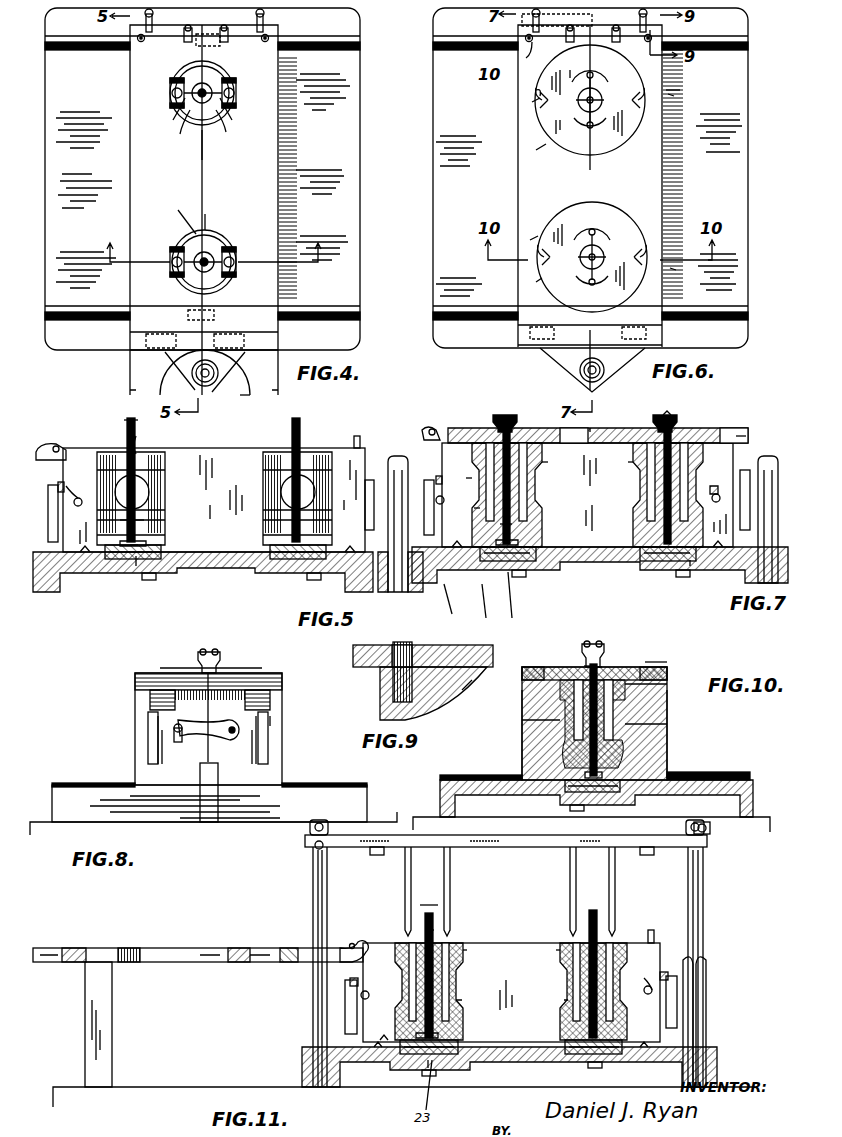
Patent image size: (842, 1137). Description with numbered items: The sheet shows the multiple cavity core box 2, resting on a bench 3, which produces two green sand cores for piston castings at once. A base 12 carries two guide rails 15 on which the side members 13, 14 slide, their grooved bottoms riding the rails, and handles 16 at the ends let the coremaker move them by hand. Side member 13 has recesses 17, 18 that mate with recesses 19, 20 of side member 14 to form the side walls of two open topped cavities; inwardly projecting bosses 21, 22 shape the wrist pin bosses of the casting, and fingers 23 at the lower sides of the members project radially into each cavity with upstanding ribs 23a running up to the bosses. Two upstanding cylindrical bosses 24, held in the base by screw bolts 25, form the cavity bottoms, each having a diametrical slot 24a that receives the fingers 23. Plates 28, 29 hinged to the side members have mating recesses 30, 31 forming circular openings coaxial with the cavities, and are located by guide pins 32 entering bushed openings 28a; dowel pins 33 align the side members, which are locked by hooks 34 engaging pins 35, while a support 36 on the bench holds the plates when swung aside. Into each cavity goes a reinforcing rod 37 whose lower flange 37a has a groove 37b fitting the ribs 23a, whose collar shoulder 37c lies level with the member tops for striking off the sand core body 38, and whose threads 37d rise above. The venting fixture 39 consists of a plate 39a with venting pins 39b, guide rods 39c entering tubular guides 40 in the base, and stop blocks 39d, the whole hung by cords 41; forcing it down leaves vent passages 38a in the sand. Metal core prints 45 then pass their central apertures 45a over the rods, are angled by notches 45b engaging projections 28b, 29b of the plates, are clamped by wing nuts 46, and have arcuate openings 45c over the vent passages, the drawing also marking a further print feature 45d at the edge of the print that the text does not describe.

In FIG. 4, the core box 2 is at (358, 102).
In FIG. 6, the core box 2 is at (750, 96).
In FIG. 5, the core box 2 is at (210, 446).
In FIG. 7, the core box 2 is at (628, 584).
In FIG. 8, the core box 2 is at (118, 738).
In FIG. 10, the core box 2 is at (688, 758).
In FIG. 11, the core box 2 is at (490, 944).
In FIG. 8, the bench 3 is at (368, 822).
In FIG. 10, the bench 3 is at (762, 818).
In FIG. 11, the bench 3 is at (174, 1086).
In FIG. 4, the base 12 is at (364, 170).
In FIG. 6, the base 12 is at (744, 178).
In FIG. 5, the base 12 is at (210, 566).
In FIG. 7, the base 12 is at (590, 552).
In FIG. 8, the base 12 is at (174, 810).
In FIG. 10, the base 12 is at (754, 780).
In FIG. 11, the base 12 is at (524, 1060).
In FIG. 4, the side member 13 is at (130, 146).
In FIG. 5, the side member 13 is at (218, 499).
In FIG. 7, the side member 13 is at (655, 494).
In FIG. 8, the side member 13 is at (138, 760).
In FIG. 10, the side member 13 is at (522, 746).
In FIG. 11, the side member 13 is at (515, 977).
In FIG. 4, the side member 14 is at (284, 144).
In FIG. 8, the side member 14 is at (280, 754).
In FIG. 9, the side member 14 is at (454, 700).
In FIG. 10, the side member 14 is at (668, 736).
In FIG. 4, the guide rail 15 is at (362, 306).
In FIG. 6, the guide rail 15 is at (736, 302).
In FIG. 5, the guide rail 15 is at (340, 558).
In FIG. 7, the guide rail 15 is at (708, 550).
In FIG. 8, the guide rail 15 is at (62, 784).
In FIG. 10, the guide rail 15 is at (468, 776).
In FIG. 11, the guide rail 15 is at (646, 1056).
In FIG. 4, the handle 16 is at (142, 40).
In FIG. 6, the handle 16 is at (518, 40).
In FIG. 5, the handle 16 is at (370, 462).
In FIG. 7, the handle 16 is at (754, 460).
In FIG. 8, the handle 16 is at (268, 716).
In FIG. 11, the handle 16 is at (704, 1012).
In FIG. 4, the recess 17 is at (172, 116).
In FIG. 5, the recess 17 is at (266, 474).
In FIG. 7, the recess 17 is at (638, 466).
In FIG. 11, the recess 17 is at (556, 942).
In FIG. 4, the recess 18 is at (184, 238).
In FIG. 5, the recess 18 is at (166, 474).
In FIG. 7, the recess 18 is at (544, 466).
In FIG. 10, the recess 18 is at (554, 692).
In FIG. 11, the recess 18 is at (464, 944).
In FIG. 4, the recess 19 is at (232, 121).
In FIG. 4, the recess 20 is at (230, 240).
In FIG. 10, the recess 20 is at (666, 686).
In FIG. 4, the boss 21 is at (176, 284).
In FIG. 5, the boss 21 is at (312, 466).
In FIG. 10, the boss 21 is at (560, 720).
In FIG. 4, the boss 22 is at (238, 280).
In FIG. 10, the boss 22 is at (704, 720).
In FIG. 4, the finger 23 is at (224, 220).
In FIG. 5, the finger 23 is at (270, 554).
In FIG. 7, the finger 23 is at (678, 548).
In FIG. 10, the finger 23 is at (602, 792).
In FIG. 11, the finger 23 is at (602, 848).
In FIG. 4, the rib 23a is at (218, 272).
In FIG. 4, the cylindrical boss 24 is at (198, 210).
In FIG. 5, the cylindrical boss 24 is at (258, 552).
In FIG. 7, the cylindrical boss 24 is at (644, 560).
In FIG. 10, the cylindrical boss 24 is at (584, 788).
In FIG. 11, the cylindrical boss 24 is at (464, 1048).
In FIG. 4, the slot 24a is at (196, 290).
In FIG. 5, the slot 24a is at (140, 556).
In FIG. 7, the slot 24a is at (517, 602).
In FIG. 11, the slot 24a is at (432, 1066).
In FIG. 5, the screw bolt 25 is at (146, 560).
In FIG. 7, the screw bolt 25 is at (706, 578).
In FIG. 4, the plate 28 is at (130, 374).
In FIG. 6, the plate 28 is at (518, 170).
In FIG. 5, the plate 28 is at (50, 450).
In FIG. 7, the plate 28 is at (742, 432).
In FIG. 8, the plate 28 is at (138, 664).
In FIG. 10, the plate 28 is at (526, 668).
In FIG. 11, the plate 28 is at (204, 962).
In FIG. 6, the bushed opening 28a is at (668, 56).
In FIG. 7, the bushed opening 28a is at (443, 606).
In FIG. 9, the bushed opening 28a is at (446, 638).
In FIG. 6, the projection 28b is at (536, 280).
In FIG. 10, the projection 28b is at (524, 676).
In FIG. 11, the projection 28b is at (278, 948).
In FIG. 4, the plate 29 is at (272, 386).
In FIG. 6, the plate 29 is at (678, 164).
In FIG. 7, the plate 29 is at (480, 608).
In FIG. 8, the plate 29 is at (276, 670).
In FIG. 9, the plate 29 is at (472, 648).
In FIG. 10, the plate 29 is at (666, 670).
In FIG. 6, the projection 29b is at (674, 268).
In FIG. 10, the projection 29b is at (660, 648).
In FIG. 4, the recess 30 is at (130, 388).
In FIG. 6, the recess 30 is at (536, 196).
In FIG. 7, the recess 30 is at (604, 428).
In FIG. 11, the recess 30 is at (228, 948).
In FIG. 4, the recess 31 is at (248, 391).
In FIG. 6, the recess 31 is at (670, 116).
In FIG. 4, the guide pin 32 is at (266, 40).
In FIG. 6, the guide pin 32 is at (512, 70).
In FIG. 5, the guide pin 32 is at (358, 434).
In FIG. 9, the guide pin 32 is at (400, 644).
In FIG. 11, the guide pin 32 is at (652, 928).
In FIG. 4, the dowel pin 33 is at (226, 386).
In FIG. 5, the dowel pin 33 is at (62, 482).
In FIG. 7, the dowel pin 33 is at (716, 486).
In FIG. 11, the dowel pin 33 is at (664, 968).
In FIG. 4, the hook 34 is at (151, 39).
In FIG. 6, the hook 34 is at (539, 45).
In FIG. 5, the hook 34 is at (62, 500).
In FIG. 7, the hook 34 is at (718, 498).
In FIG. 8, the hook 34 is at (214, 738).
In FIG. 11, the hook 34 is at (706, 974).
In FIG. 4, the pin 35 is at (181, 43).
In FIG. 6, the pin 35 is at (571, 38).
In FIG. 8, the pin 35 is at (182, 744).
In FIG. 11, the support 36 is at (88, 1014).
In FIG. 4, the rod 37 is at (208, 214).
In FIG. 6, the rod 37 is at (606, 244).
In FIG. 5, the rod 37 is at (290, 436).
In FIG. 7, the rod 37 is at (642, 496).
In FIG. 8, the rod 37 is at (210, 648).
In FIG. 10, the rod 37 is at (622, 702).
In FIG. 11, the rod 37 is at (626, 958).
In FIG. 4, the flange 37a is at (178, 210).
In FIG. 5, the flange 37a is at (142, 524).
In FIG. 7, the flange 37a is at (540, 524).
In FIG. 11, the flange 37a is at (460, 1032).
In FIG. 5, the groove 37b is at (146, 542).
In FIG. 7, the groove 37b is at (530, 542).
In FIG. 11, the groove 37b is at (382, 1038).
In FIG. 4, the shoulder 37c is at (200, 160).
In FIG. 5, the shoulder 37c is at (126, 438).
In FIG. 7, the shoulder 37c is at (496, 420).
In FIG. 11, the shoulder 37c is at (442, 924).
In FIG. 5, the screw threads 37d is at (146, 436).
In FIG. 11, the screw threads 37d is at (432, 912).
In FIG. 7, the core body 38 is at (624, 514).
In FIG. 10, the core body 38 is at (560, 752).
In FIG. 11, the core body 38 is at (562, 986).
In FIG. 6, the vent passage 38a is at (594, 282).
In FIG. 7, the vent passage 38a is at (474, 510).
In FIG. 11, the vent passage 38a is at (558, 1006).
In FIG. 11, the venting fixture 39 is at (606, 868).
In FIG. 11, the plate 39a is at (524, 848).
In FIG. 11, the venting pin 39b is at (444, 860).
In FIG. 11, the guide rod 39c is at (706, 880).
In FIG. 11, the stop block 39d is at (648, 854).
In FIG. 4, the tubular guide 40 is at (194, 382).
In FIG. 6, the tubular guide 40 is at (568, 368).
In FIG. 5, the tubular guide 40 is at (398, 460).
In FIG. 7, the tubular guide 40 is at (768, 460).
In FIG. 8, the tubular guide 40 is at (218, 776).
In FIG. 11, the tubular guide 40 is at (712, 994).
In FIG. 10, the cord 41 is at (694, 830).
In FIG. 11, the cord 41 is at (690, 829).
In FIG. 6, the core print 45 is at (594, 160).
In FIG. 7, the core print 45 is at (704, 430).
In FIG. 8, the core print 45 is at (180, 672).
In FIG. 10, the core print 45 is at (610, 668).
In FIG. 10, the central aperture 45a is at (584, 666).
In FIG. 6, the notch 45b is at (596, 200).
In FIG. 6, the arcuate opening 45c is at (588, 284).
In FIG. 7, the arcuate opening 45c is at (468, 478).
In FIG. 6, the disc lug 45d is at (522, 234).
In FIG. 7, the disc lug 45d is at (589, 421).
In FIG. 6, the wing nut 46 is at (582, 264).
In FIG. 7, the wing nut 46 is at (686, 418).
In FIG. 8, the wing nut 46 is at (218, 648).
In FIG. 10, the wing nut 46 is at (602, 644).